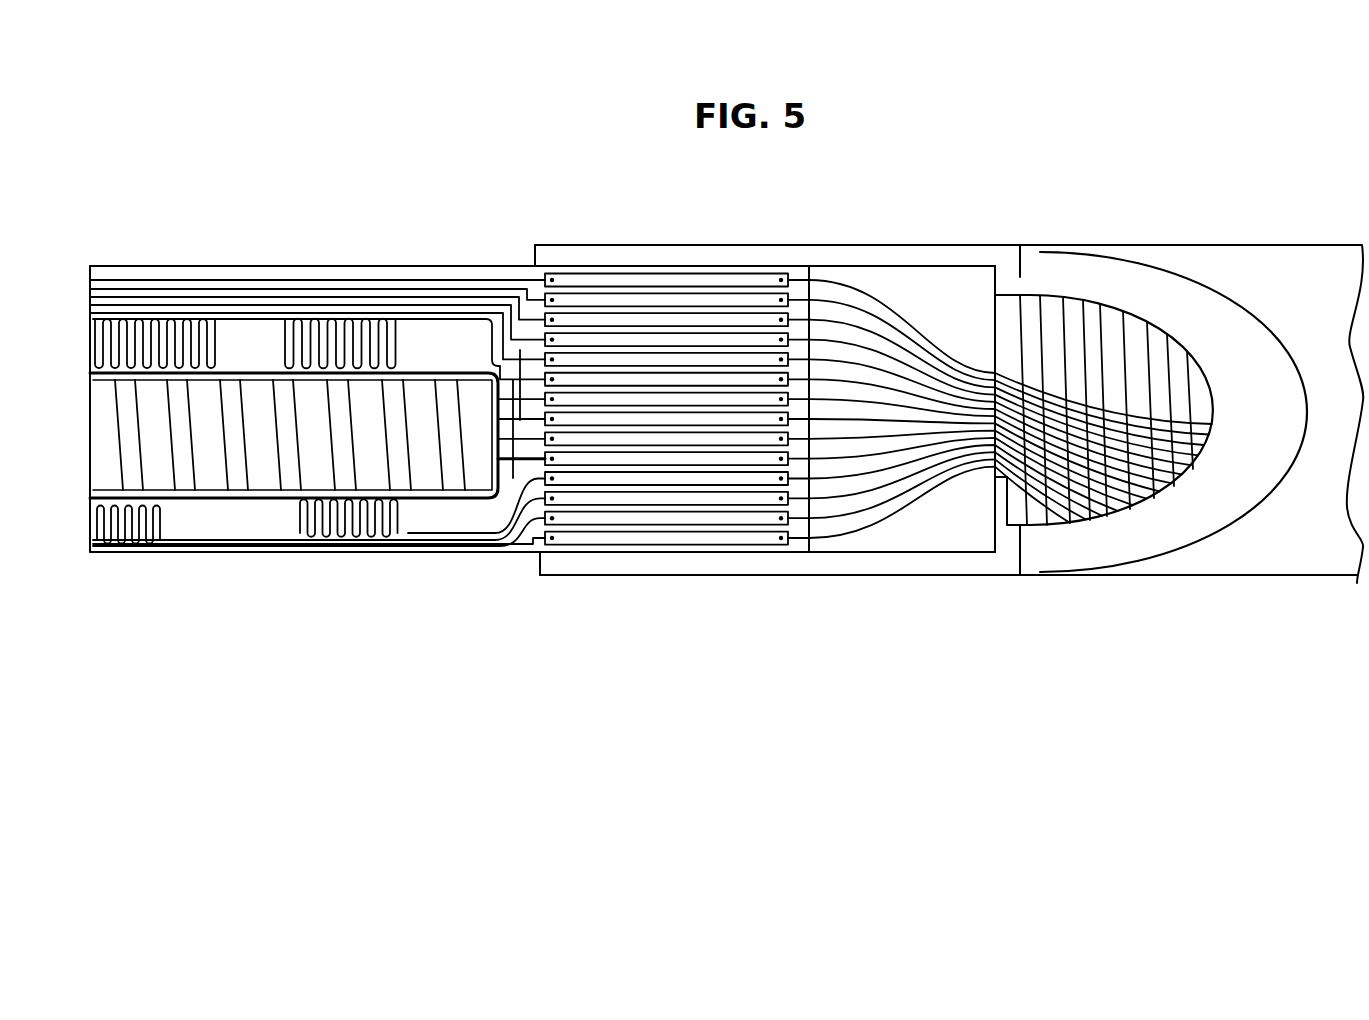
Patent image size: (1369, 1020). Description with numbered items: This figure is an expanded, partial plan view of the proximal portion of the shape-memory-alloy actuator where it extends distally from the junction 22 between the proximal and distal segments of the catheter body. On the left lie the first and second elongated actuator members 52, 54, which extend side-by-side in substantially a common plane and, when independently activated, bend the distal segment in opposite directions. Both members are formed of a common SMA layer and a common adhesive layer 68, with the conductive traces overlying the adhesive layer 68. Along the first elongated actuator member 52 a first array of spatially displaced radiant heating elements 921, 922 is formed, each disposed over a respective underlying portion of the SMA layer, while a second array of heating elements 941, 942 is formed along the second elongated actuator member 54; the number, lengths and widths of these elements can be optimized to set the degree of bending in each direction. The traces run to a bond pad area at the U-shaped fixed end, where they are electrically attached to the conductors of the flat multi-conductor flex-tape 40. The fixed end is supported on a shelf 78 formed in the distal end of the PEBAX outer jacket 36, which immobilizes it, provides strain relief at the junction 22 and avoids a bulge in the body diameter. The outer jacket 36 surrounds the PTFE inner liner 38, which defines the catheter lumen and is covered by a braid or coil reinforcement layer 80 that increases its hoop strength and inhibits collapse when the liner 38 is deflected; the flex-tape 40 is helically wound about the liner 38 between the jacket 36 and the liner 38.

The intermediate junction 22 is at (946, 199).
The outer jacket 36 is at (1215, 262).
The inner liner 38 is at (107, 465).
The flex-tape 40 is at (1070, 495).
The first elongated actuator member 52 is at (445, 560).
The second elongated actuator member 54 is at (445, 266).
The adhesive layer 68 is at (455, 356).
The shelf 78 is at (997, 250).
The reinforcement layer 80 is at (1087, 327).
The heating element 921 is at (292, 523).
The heating element 922 is at (84, 540).
The heating element 941 is at (275, 338).
The heating element 942 is at (220, 336).